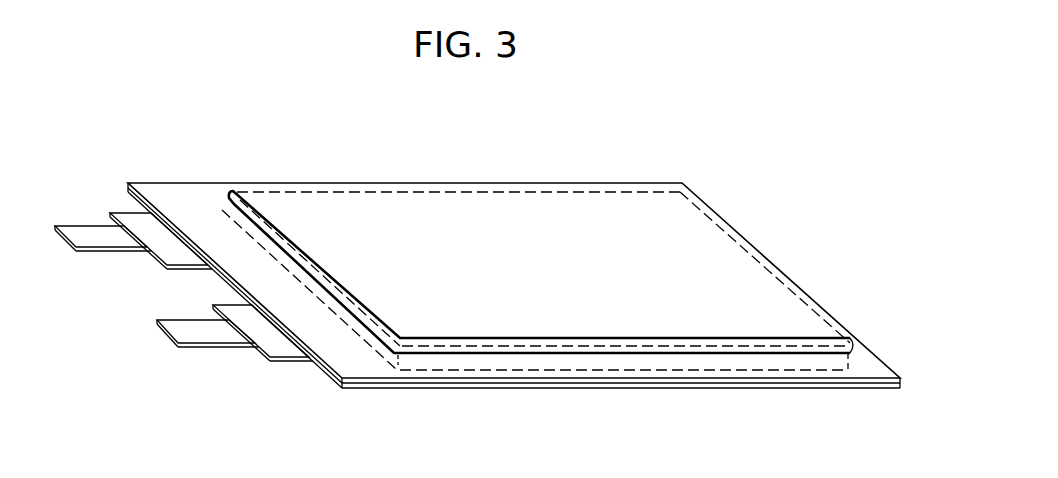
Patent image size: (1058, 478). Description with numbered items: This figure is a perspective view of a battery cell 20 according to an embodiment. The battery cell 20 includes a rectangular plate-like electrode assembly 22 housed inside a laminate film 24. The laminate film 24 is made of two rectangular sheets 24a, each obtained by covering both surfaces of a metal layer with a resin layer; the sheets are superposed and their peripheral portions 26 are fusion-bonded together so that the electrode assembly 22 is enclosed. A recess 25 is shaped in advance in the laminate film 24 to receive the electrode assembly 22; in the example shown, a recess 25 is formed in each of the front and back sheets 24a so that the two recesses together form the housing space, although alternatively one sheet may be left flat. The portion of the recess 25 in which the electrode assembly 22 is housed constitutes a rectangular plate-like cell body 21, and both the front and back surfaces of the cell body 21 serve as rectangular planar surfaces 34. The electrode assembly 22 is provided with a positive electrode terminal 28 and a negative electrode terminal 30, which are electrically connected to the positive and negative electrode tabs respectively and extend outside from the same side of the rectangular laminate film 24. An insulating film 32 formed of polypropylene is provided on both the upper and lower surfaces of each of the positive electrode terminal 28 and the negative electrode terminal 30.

The battery cell 20 is at (427, 129).
The cell body 21 is at (675, 239).
The electrode assembly 22 is at (563, 190).
The laminate film 24 is at (203, 200).
The rectangular sheet 24a is at (345, 392).
The recess 25 is at (808, 340).
The peripheral portion 26 is at (675, 379).
The positive electrode terminal 28 is at (208, 333).
The negative electrode terminal 30 is at (112, 238).
The insulating film 32 is at (140, 218).
The planar surface 34 is at (348, 196).